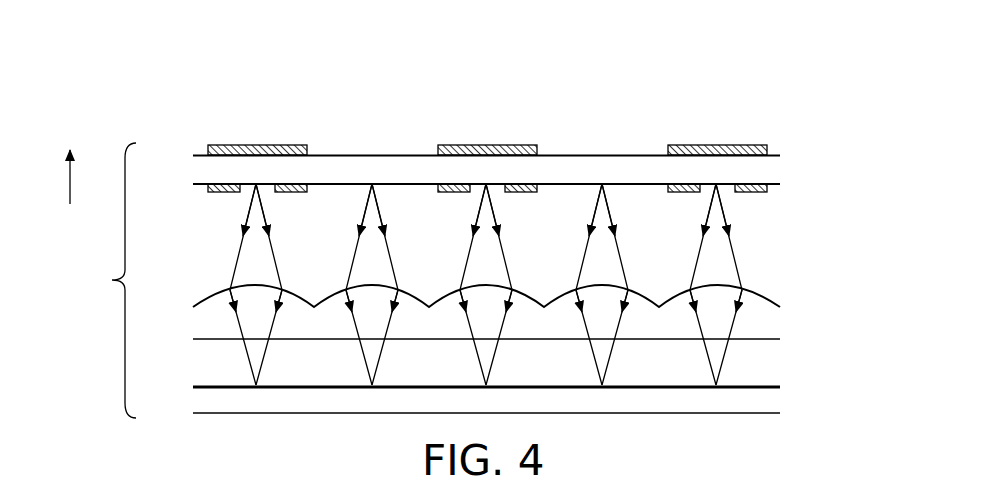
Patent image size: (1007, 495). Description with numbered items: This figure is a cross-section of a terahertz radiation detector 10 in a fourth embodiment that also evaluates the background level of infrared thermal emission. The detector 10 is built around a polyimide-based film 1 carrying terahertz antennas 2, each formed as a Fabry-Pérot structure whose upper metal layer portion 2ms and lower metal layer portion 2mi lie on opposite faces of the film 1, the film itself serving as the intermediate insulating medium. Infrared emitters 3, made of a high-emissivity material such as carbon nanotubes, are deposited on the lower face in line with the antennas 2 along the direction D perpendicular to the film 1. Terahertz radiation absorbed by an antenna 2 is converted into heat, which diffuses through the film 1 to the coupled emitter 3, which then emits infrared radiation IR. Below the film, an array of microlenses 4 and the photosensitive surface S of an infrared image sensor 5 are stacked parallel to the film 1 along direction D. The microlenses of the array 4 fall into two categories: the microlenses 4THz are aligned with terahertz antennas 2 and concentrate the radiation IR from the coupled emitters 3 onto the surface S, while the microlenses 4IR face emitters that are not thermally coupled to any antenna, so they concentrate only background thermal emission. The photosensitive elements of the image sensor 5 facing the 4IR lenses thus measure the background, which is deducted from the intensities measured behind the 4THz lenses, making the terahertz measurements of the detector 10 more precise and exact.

The polyimide-based film 1 is at (776, 168).
The terahertz antenna 2 is at (530, 147).
The upper metal layer portion 2ms is at (746, 150).
The lower metal layer portion 2mi is at (756, 193).
The infrared emitter 3 is at (256, 186).
The infrared radiation IR is at (200, 276).
The array of microlenses 4 is at (512, 291).
The microlens associated with a terahertz antenna 4THz is at (770, 272).
The microlens not associated with any terahertz antenna 4IR is at (797, 343).
The photosensitive surface S is at (768, 382).
The image sensor 5 is at (775, 401).
The terahertz radiation detector 10 is at (105, 280).
The direction perpendicular to the film D is at (55, 177).